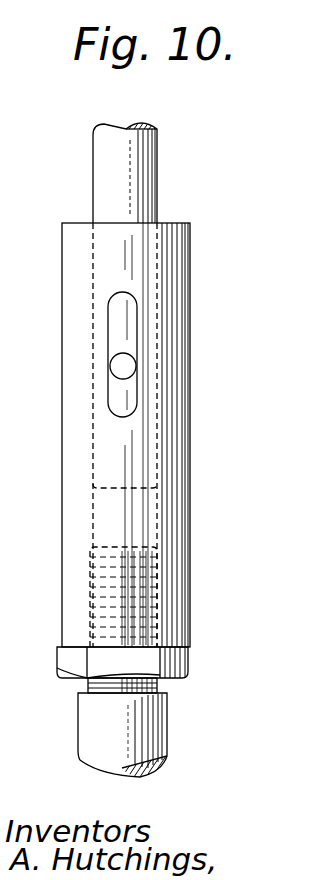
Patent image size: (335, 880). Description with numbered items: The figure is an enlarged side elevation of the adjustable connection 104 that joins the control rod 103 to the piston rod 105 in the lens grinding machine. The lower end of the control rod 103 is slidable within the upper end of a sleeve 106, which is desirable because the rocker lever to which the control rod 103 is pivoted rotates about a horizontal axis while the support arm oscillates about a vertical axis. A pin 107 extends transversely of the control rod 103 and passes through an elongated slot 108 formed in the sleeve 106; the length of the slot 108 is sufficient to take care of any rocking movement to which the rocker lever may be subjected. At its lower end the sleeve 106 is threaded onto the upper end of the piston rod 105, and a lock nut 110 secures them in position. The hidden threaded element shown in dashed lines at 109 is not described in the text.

The control rod 103 is at (147, 162).
The adjustable connection 104 is at (55, 309).
The piston rod 105 is at (152, 738).
The sleeve 106 is at (187, 252).
The pin 107 is at (125, 366).
The elongated slot 108 is at (127, 317).
The threaded insert 109 is at (95, 592).
The lock nut 110 is at (187, 657).